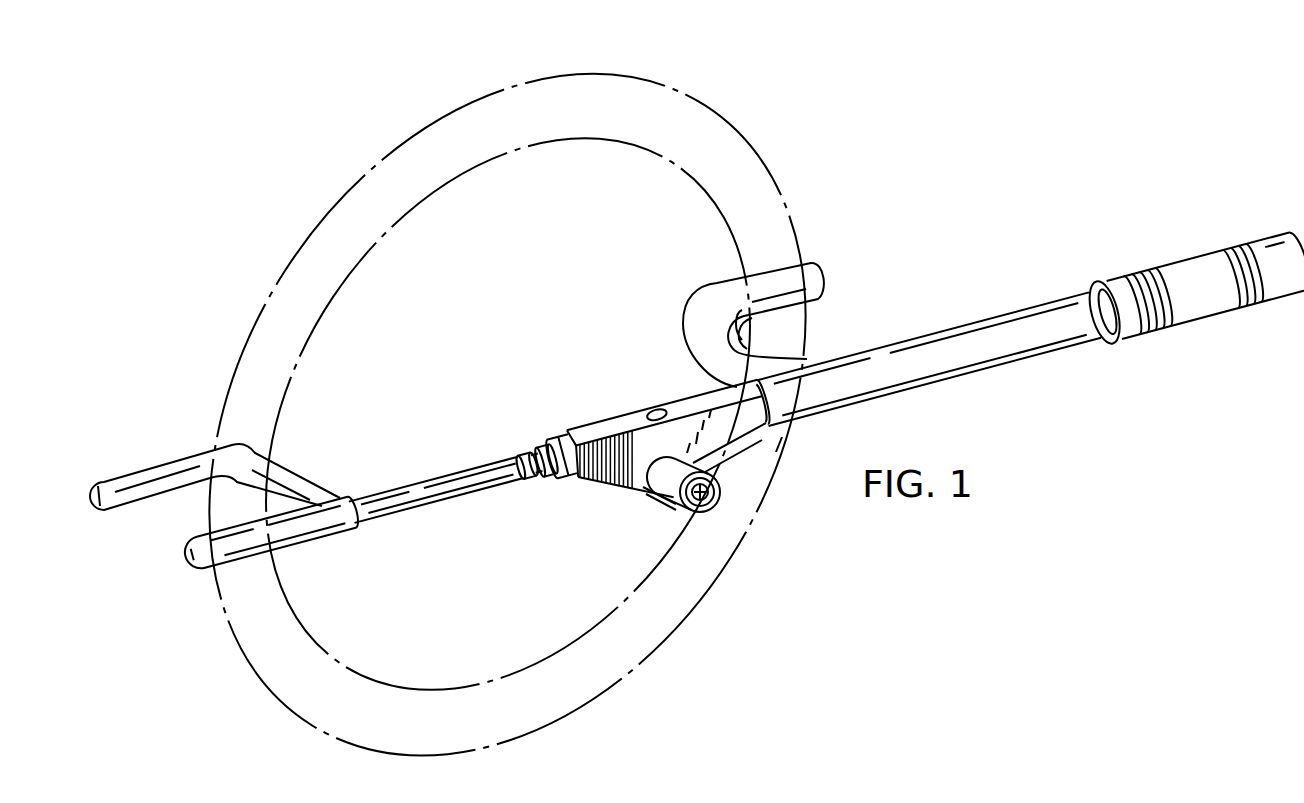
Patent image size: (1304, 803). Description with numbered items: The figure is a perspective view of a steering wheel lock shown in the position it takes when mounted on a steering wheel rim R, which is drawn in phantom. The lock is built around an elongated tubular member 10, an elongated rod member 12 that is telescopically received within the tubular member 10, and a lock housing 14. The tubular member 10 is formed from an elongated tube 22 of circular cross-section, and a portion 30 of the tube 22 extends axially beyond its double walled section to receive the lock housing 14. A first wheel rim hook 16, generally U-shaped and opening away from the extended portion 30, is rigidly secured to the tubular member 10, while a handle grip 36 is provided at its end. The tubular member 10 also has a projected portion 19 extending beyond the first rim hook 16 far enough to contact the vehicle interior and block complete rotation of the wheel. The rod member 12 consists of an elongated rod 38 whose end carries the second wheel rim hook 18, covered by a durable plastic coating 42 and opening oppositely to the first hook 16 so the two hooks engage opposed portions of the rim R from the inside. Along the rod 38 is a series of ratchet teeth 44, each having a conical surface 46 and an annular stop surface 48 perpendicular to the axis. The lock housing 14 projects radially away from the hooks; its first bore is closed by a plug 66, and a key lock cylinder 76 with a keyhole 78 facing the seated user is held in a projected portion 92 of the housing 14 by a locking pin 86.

The elongated tubular member 10 is at (937, 276).
The elongated rod member 12 is at (434, 523).
The lock housing 14 is at (603, 424).
The first wheel rim hook 16 is at (703, 305).
The second wheel rim hook 18 is at (308, 490).
The projected portion 19 is at (1091, 367).
The elongated tube 22 is at (567, 480).
The extended portion 30 is at (568, 440).
The handle grip 36 is at (1262, 252).
The elongated rod 38 is at (452, 492).
The second durable plastic coating 42 is at (355, 500).
The ratchet teeth 44 is at (519, 449).
The conical surface 46 is at (533, 470).
The annular stop surface 48 is at (550, 470).
The plug 66 is at (657, 410).
The key lock cylinder 76 is at (723, 487).
The keyhole 78 is at (706, 492).
The locking pin 86 is at (668, 500).
The projected portion of the lock housing 92 is at (737, 452).
The steering wheel rim R is at (655, 652).